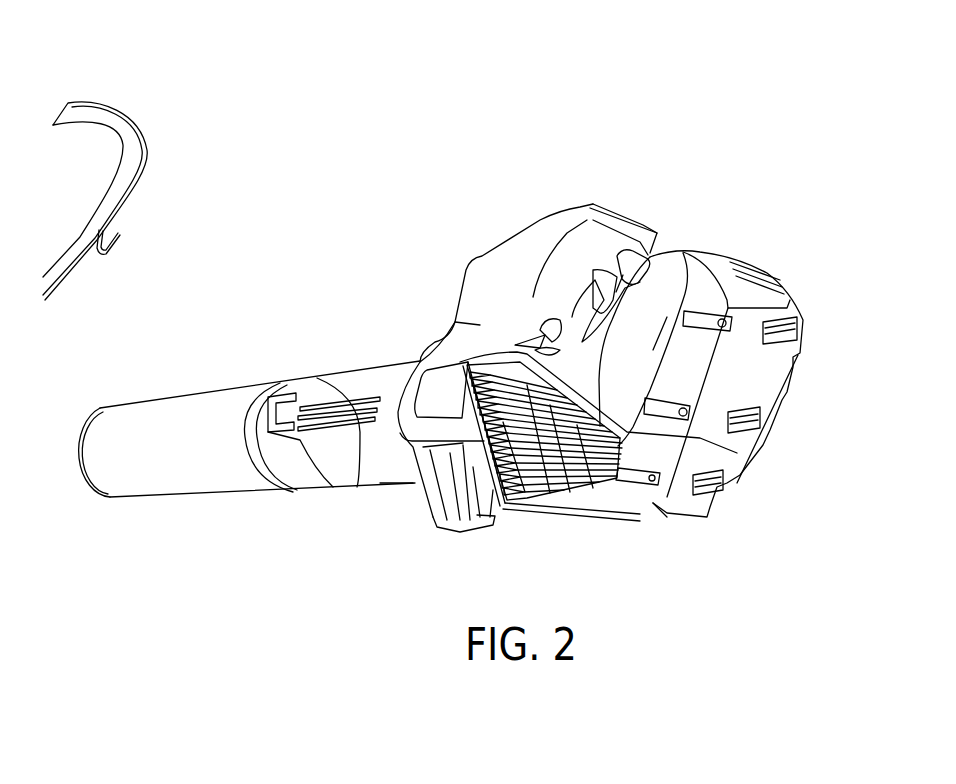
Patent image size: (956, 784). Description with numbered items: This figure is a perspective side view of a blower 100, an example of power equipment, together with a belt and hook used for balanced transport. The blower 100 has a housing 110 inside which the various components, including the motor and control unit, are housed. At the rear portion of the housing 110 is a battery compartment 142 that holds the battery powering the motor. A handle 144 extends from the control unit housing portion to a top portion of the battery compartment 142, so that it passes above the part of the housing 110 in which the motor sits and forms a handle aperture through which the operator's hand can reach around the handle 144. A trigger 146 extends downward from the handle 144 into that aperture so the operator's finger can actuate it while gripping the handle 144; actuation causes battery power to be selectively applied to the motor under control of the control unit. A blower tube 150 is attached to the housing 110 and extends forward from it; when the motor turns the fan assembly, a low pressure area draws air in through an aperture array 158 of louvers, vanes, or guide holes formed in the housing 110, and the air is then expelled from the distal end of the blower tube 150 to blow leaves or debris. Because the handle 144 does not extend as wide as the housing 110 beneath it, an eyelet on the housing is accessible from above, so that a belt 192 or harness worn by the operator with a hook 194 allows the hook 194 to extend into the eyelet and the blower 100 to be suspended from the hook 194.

The blower 100 is at (423, 121).
The housing 110 is at (482, 300).
The battery compartment 142 is at (693, 283).
The handle 144 is at (628, 250).
The trigger 146 is at (601, 282).
The blower tube 150 is at (185, 400).
The aperture array 158 is at (573, 483).
The belt 192 is at (92, 99).
The hook 194 is at (125, 232).